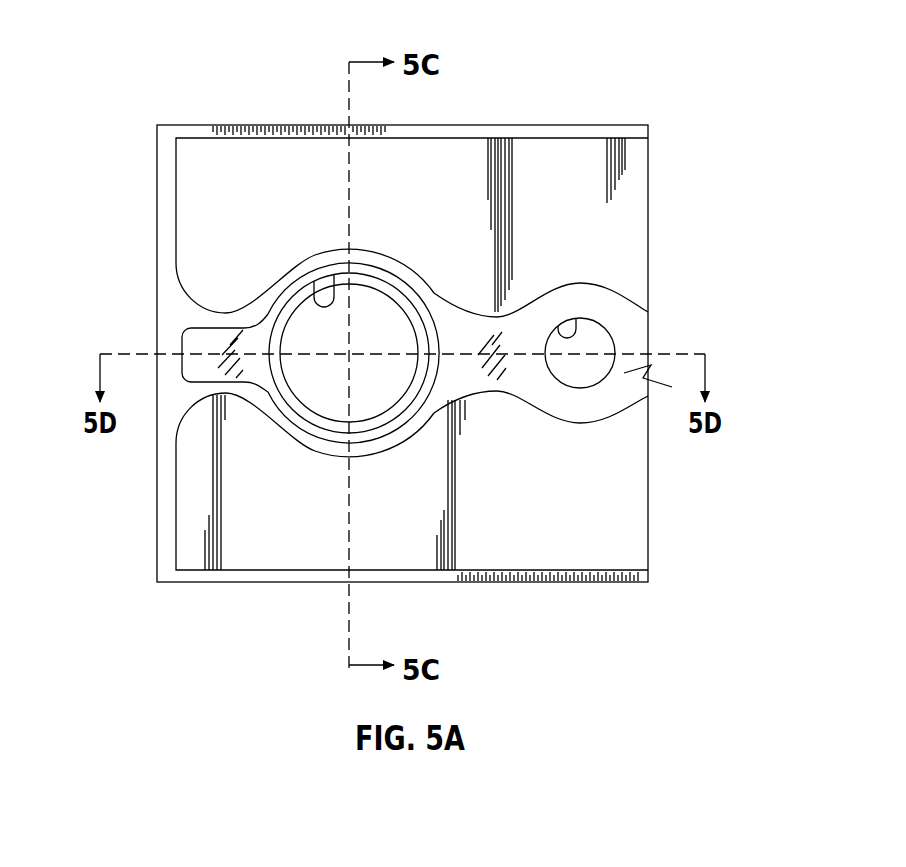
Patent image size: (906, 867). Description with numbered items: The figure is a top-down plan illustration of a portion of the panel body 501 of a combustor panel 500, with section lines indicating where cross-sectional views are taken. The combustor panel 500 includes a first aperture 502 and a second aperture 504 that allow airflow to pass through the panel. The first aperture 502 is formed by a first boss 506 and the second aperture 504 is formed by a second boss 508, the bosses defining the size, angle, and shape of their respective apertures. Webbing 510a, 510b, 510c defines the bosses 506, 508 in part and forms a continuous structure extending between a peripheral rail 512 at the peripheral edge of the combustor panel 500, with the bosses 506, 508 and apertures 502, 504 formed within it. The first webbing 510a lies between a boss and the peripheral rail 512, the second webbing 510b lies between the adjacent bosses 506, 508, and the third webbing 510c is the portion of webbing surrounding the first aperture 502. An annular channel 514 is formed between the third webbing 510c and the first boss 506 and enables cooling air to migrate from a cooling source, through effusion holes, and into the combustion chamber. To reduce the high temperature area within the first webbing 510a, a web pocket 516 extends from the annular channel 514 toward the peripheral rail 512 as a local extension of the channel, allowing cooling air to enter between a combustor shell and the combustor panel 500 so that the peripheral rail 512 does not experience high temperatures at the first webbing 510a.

The combustor panel 500 is at (676, 100).
The panel body 501 is at (634, 546).
The first aperture 502 is at (401, 337).
The second aperture 504 is at (594, 332).
The first boss 506 is at (334, 275).
The second boss 508 is at (576, 318).
The first webbing 510a is at (223, 318).
The second webbing 510b is at (492, 372).
The third webbing 510c is at (330, 452).
The peripheral rail 512 is at (218, 577).
The annular channel 514 is at (268, 312).
The web pocket 516 is at (202, 338).